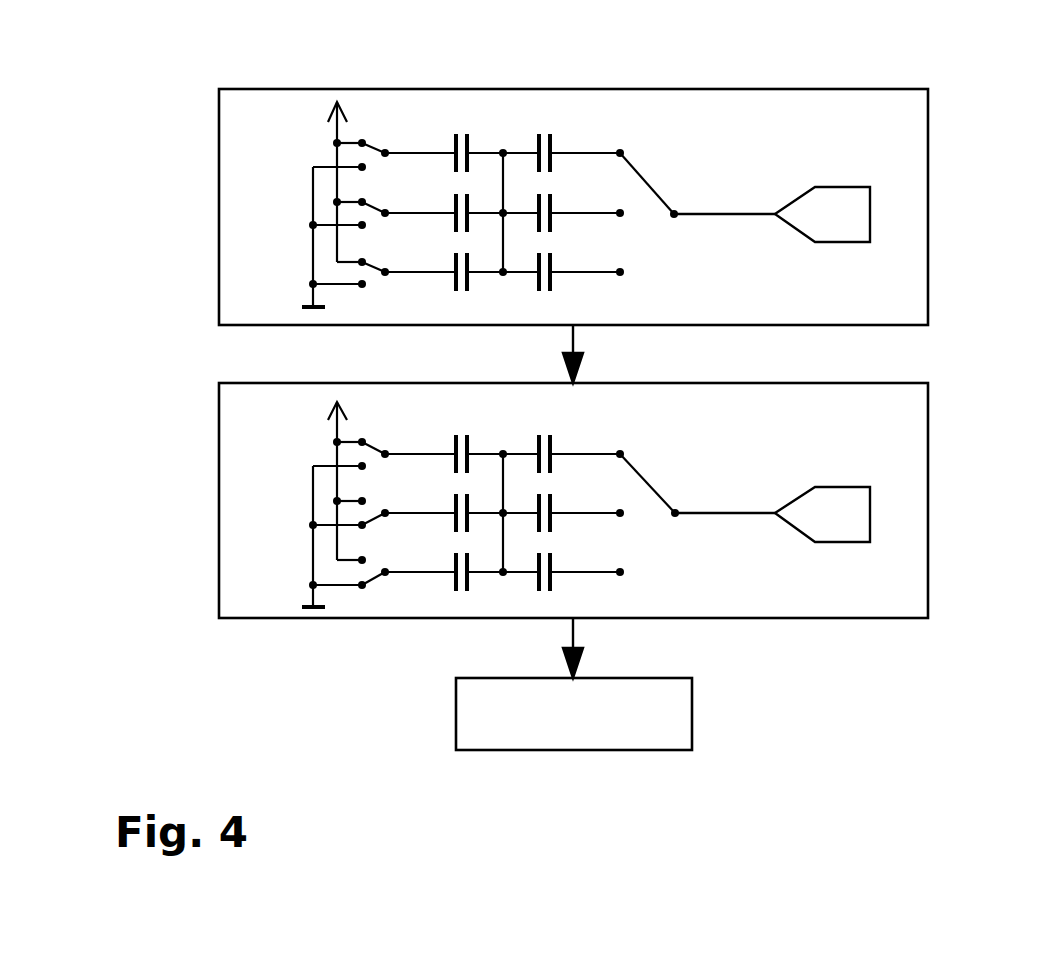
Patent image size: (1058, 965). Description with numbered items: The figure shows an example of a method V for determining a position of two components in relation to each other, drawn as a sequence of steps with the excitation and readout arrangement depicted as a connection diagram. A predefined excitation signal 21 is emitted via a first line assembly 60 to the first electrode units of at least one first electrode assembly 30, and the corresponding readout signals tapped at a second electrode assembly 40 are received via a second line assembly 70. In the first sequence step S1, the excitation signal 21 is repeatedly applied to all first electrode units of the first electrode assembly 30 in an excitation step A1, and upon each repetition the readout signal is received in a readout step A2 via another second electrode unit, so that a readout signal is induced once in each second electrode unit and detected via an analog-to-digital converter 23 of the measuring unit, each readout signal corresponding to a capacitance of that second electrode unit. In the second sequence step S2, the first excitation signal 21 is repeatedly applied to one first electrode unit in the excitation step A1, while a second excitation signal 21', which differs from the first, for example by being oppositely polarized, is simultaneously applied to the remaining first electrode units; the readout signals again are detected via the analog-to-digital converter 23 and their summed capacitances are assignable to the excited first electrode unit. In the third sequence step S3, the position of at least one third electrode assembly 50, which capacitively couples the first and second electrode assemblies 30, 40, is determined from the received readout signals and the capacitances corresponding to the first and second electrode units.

The method V is at (142, 116).
The first sequence step S1 is at (219, 205).
The second sequence step S2 is at (219, 500).
The third sequence step S3 is at (456, 712).
The excitation step A1 is at (326, 82).
The readout step A2 is at (870, 106).
The excitation signal 21 is at (324, 368).
The second excitation signal 21' is at (270, 583).
The analog-to-digital converter 23 is at (848, 187).
The first electrode assembly 30 is at (452, 106).
The second electrode assembly 40 is at (554, 106).
The third electrode assembly 50 is at (539, 122).
The first line assembly 60 is at (410, 112).
The second line assembly 70 is at (598, 116).